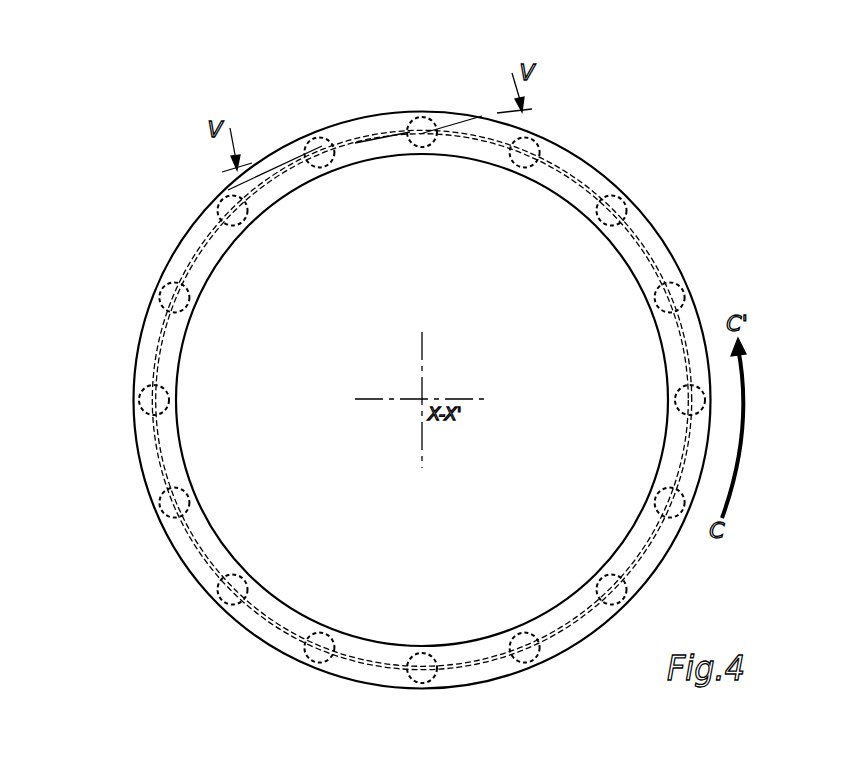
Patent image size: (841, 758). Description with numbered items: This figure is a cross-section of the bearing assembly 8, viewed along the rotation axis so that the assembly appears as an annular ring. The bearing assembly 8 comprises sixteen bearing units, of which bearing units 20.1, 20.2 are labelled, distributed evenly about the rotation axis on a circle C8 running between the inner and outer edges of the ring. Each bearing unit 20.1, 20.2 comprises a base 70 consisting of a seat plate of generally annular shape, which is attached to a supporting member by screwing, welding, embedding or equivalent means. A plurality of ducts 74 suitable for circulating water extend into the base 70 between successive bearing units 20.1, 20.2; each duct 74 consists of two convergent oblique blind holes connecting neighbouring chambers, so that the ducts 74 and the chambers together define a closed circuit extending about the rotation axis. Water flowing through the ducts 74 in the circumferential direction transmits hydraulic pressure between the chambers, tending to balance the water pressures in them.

The bearing assembly 8 is at (391, 400).
The base 70 is at (563, 158).
The duct 74 is at (275, 183).
The bearing unit 20.1 is at (337, 130).
The bearing unit 20.2 is at (424, 120).
The circle of module centers C8 is at (158, 347).